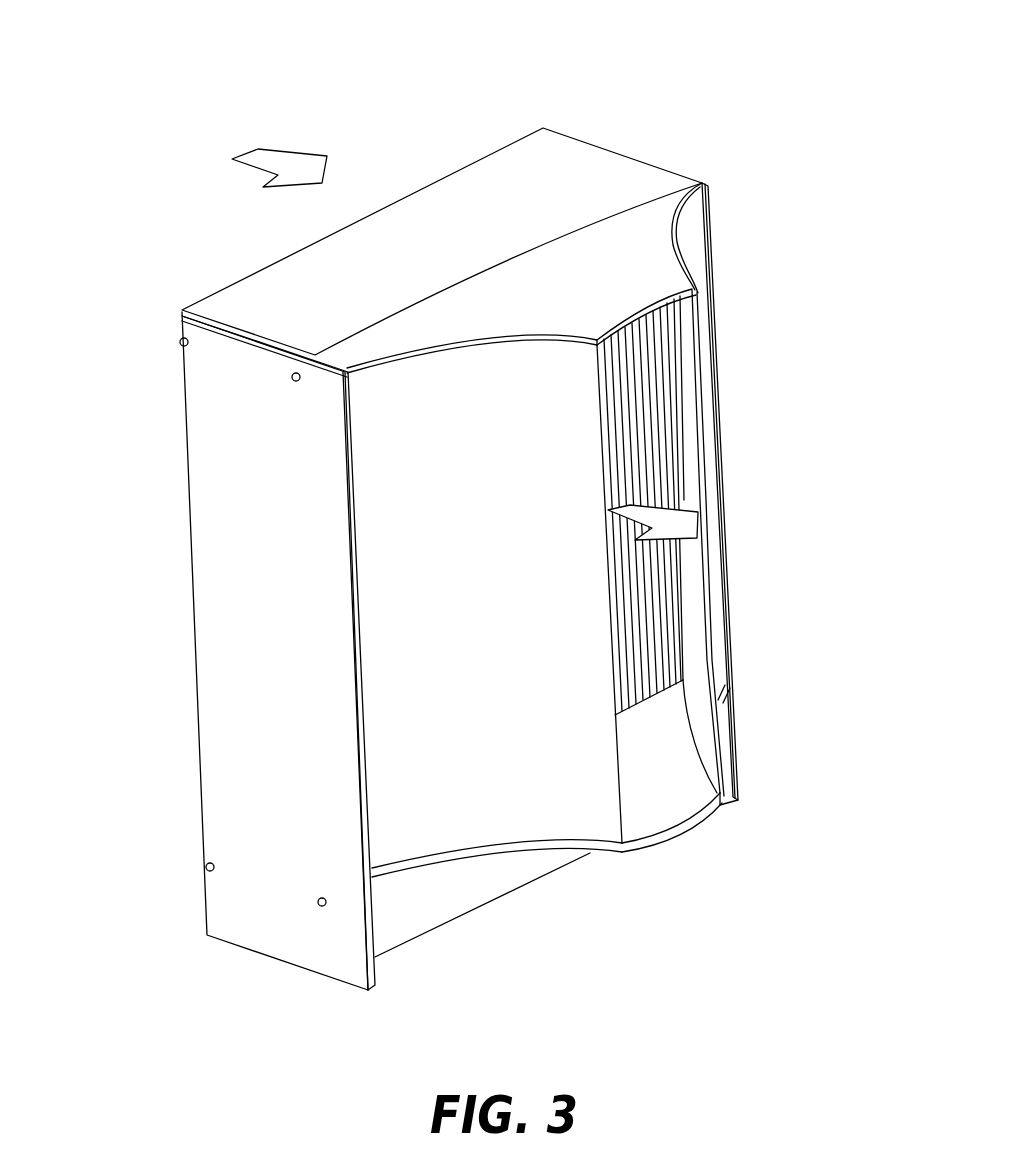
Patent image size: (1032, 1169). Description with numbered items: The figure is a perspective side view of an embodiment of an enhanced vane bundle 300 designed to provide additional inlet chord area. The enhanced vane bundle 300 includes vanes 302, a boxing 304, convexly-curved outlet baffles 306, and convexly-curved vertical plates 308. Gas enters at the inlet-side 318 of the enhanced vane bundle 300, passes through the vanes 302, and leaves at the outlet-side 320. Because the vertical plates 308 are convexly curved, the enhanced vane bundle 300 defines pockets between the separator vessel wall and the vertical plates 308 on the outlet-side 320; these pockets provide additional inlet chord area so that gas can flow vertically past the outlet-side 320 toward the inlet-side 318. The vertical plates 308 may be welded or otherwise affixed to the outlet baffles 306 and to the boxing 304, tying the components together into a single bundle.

The enhanced vane bundle 300 is at (815, 37).
The vanes 302 is at (623, 428).
The boxing 304 is at (258, 563).
The convexly-curved outlet baffles 306 is at (664, 229).
The convexly-curved vertical plates 308 is at (707, 310).
The inlet-side 318 is at (146, 269).
The outlet-side 320 is at (759, 579).